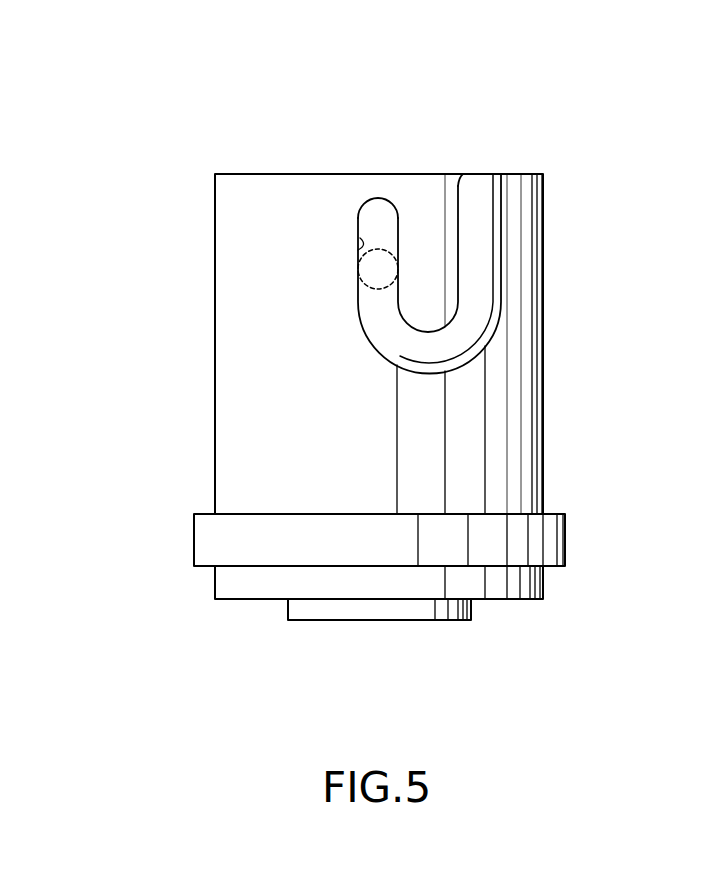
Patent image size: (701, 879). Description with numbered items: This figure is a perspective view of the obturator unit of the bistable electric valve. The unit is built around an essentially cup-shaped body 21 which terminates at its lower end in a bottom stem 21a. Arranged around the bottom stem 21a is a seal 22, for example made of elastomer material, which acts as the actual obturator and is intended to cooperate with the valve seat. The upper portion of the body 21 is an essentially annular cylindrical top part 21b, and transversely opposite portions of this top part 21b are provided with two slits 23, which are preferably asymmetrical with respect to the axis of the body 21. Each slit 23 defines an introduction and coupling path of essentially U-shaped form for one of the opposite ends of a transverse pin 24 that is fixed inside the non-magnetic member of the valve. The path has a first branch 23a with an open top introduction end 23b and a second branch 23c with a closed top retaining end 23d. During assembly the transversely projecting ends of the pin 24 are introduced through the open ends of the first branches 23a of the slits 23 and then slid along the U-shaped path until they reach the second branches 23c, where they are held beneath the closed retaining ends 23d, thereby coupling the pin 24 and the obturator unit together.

The cup-shaped body 21 is at (190, 360).
The bottom stem 21a is at (382, 606).
The annular cylindrical top part 21b is at (257, 233).
The seal 22 is at (255, 578).
The slit 23 is at (490, 165).
The first branch 23a is at (492, 244).
The open top introduction end 23b is at (463, 175).
The second branch 23c is at (358, 247).
The closed top retaining end 23d is at (362, 207).
The pin 24 is at (378, 250).